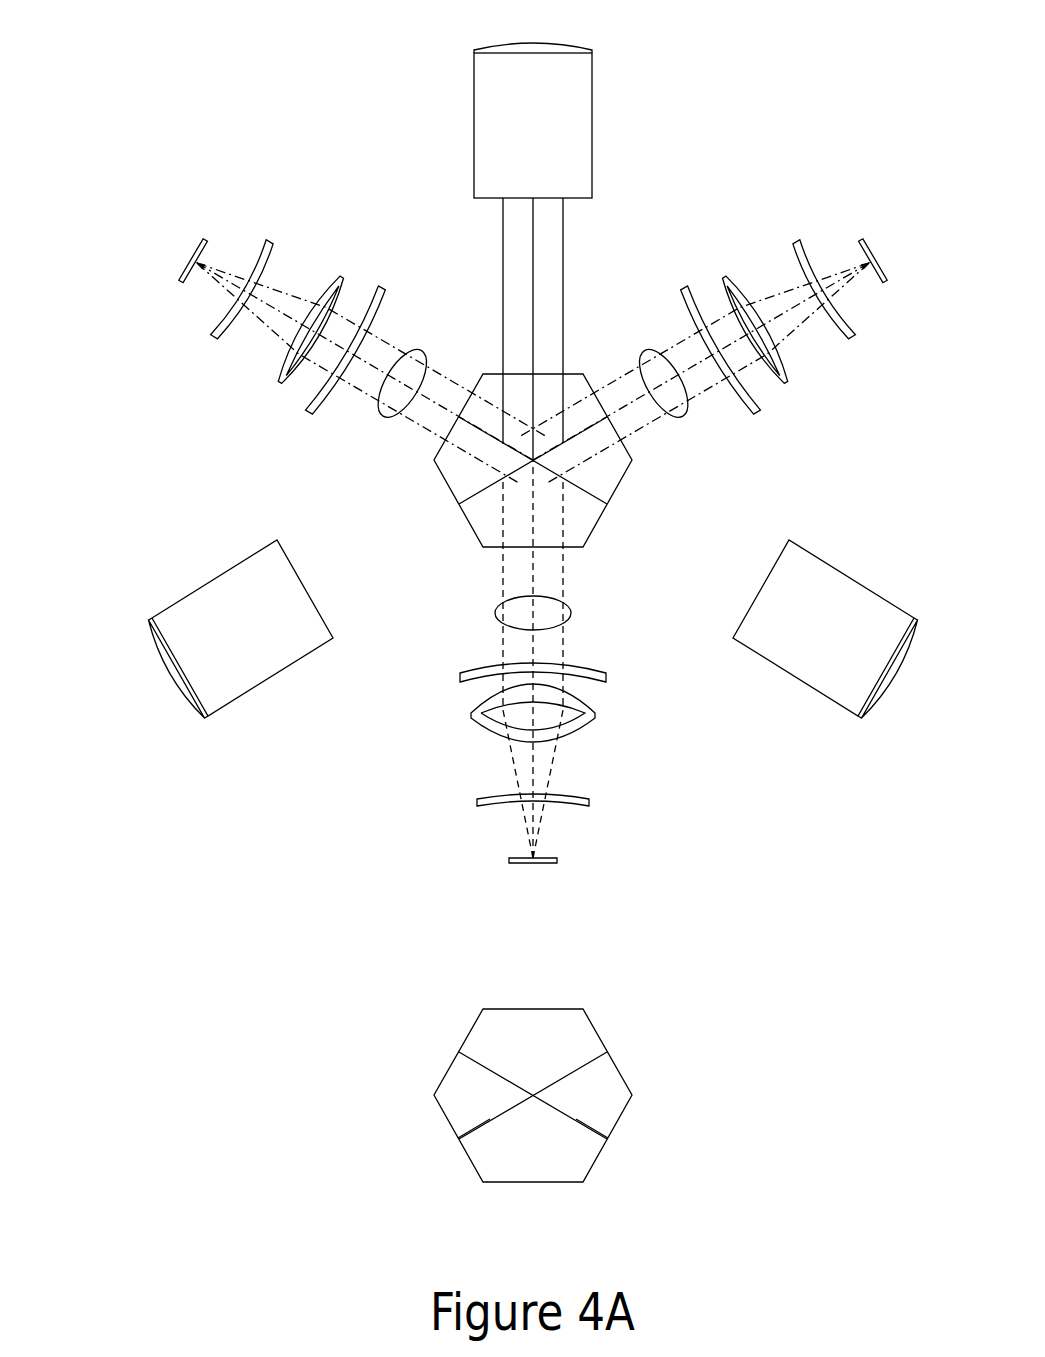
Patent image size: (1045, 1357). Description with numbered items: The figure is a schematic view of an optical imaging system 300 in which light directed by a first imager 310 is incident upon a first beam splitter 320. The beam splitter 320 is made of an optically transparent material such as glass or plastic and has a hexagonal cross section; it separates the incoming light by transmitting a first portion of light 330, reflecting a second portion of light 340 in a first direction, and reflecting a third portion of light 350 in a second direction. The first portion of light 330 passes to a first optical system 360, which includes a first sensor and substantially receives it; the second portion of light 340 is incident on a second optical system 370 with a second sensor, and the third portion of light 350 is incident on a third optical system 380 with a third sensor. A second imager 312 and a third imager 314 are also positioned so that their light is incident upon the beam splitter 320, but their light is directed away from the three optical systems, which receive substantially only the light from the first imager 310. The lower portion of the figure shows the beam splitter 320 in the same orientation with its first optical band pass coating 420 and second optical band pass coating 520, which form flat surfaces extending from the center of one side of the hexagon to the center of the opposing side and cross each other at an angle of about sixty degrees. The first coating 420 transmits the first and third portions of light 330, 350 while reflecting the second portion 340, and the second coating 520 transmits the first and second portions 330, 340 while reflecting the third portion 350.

The optical imaging system 300 is at (124, 68).
The first imager 310 is at (593, 125).
The second imager 312 is at (858, 577).
The third imager 314 is at (208, 577).
The first beam splitter 320 is at (618, 486).
The first portion of light 330 is at (496, 614).
The second portion of light 340 is at (415, 352).
The third portion of light 350 is at (651, 352).
The first optical system 360 is at (457, 657).
The second optical system 370 is at (333, 422).
The third optical system 380 is at (918, 313).
The first optical band pass coating 420 is at (488, 1118).
The second optical band pass coating 520 is at (578, 1118).